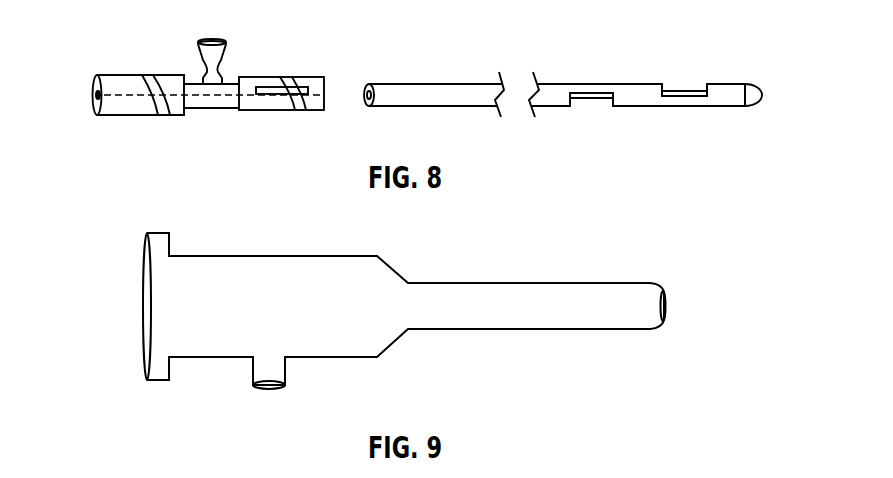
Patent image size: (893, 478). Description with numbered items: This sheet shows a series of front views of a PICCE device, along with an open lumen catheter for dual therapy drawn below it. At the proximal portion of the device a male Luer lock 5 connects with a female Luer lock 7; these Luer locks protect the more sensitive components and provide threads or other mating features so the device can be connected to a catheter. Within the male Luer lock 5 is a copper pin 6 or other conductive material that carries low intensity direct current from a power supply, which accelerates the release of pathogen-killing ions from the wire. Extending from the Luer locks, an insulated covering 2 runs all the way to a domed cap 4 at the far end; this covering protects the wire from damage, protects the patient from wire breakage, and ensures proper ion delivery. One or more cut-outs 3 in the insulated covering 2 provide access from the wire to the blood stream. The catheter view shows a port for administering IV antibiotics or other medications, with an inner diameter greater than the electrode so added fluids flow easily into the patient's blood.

The insulated covering 2 is at (440, 84).
The cut-outs 3 is at (684, 91).
The domed cap 4 is at (750, 88).
The male Luer lock 5 is at (132, 75).
The copper pin 6 is at (81, 94).
The female Luer lock 7 is at (268, 77).